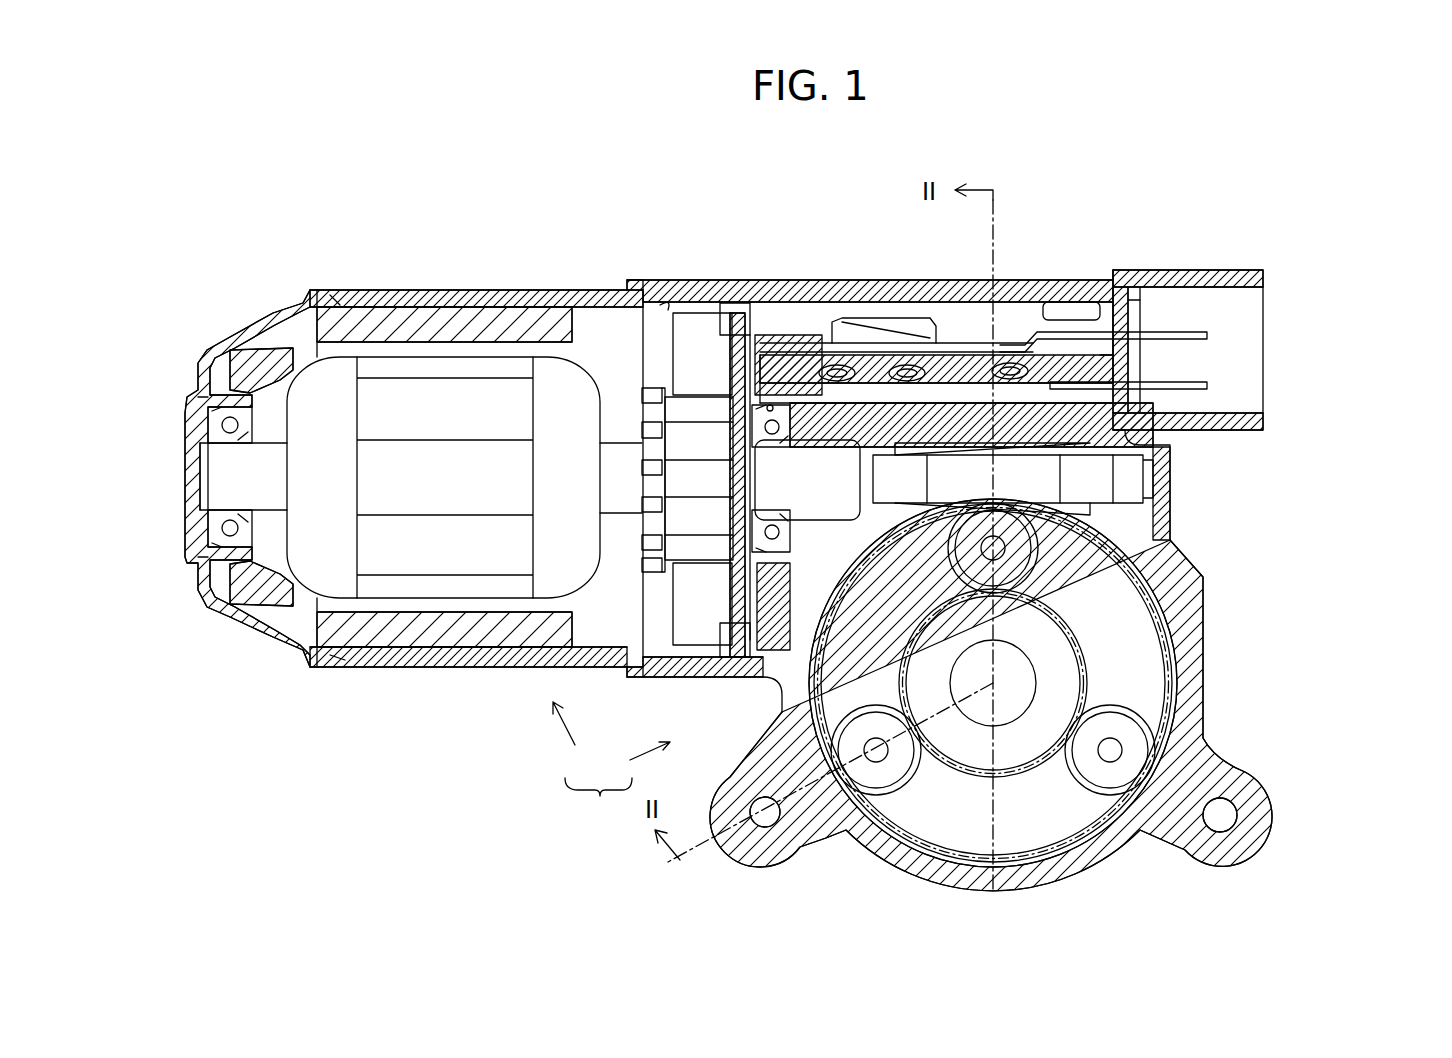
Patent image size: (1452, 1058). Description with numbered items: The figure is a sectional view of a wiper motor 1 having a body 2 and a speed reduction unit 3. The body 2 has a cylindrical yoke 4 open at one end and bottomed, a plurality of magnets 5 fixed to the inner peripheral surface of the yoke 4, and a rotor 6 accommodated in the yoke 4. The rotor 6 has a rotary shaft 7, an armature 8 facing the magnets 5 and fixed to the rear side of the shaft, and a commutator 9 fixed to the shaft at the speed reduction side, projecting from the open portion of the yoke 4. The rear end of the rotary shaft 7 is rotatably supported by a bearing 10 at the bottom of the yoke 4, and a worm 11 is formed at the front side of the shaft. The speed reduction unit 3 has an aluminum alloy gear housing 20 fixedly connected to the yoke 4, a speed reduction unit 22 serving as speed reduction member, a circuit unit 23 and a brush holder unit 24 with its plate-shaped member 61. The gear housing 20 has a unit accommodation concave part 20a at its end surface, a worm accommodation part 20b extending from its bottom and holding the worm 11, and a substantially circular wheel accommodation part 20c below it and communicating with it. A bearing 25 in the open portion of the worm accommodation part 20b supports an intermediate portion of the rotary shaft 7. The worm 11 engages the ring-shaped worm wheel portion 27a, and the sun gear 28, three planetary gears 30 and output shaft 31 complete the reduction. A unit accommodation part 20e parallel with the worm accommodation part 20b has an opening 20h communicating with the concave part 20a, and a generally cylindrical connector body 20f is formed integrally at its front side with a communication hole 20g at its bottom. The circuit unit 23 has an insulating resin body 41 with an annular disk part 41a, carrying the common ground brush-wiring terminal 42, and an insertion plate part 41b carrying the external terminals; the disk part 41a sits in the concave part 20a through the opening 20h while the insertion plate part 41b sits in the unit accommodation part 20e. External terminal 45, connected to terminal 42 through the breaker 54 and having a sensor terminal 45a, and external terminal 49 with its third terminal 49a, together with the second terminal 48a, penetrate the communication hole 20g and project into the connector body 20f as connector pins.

The motor 1 is at (598, 808).
The body 2 is at (566, 743).
The speed reduction unit 3 is at (638, 763).
The yoke housing 4 is at (462, 300).
The magnets 5 is at (385, 305).
The rotor 6 is at (597, 362).
The rotary shaft 7 is at (212, 478).
The armature 8 is at (585, 578).
The commutator 9 is at (680, 480).
The bearing 10 is at (213, 603).
The worm 11 is at (1130, 490).
The gear housing 20 is at (800, 292).
The unit accommodation concave part 20a is at (690, 672).
The worm accommodation part 20b is at (1132, 437).
The wheel accommodation part 20c is at (1052, 868).
The unit accommodation part 20e is at (905, 308).
The connector body 20f is at (1185, 272).
The communication hole 20g is at (1135, 305).
The opening 20h is at (740, 330).
The speed reduction unit 22 is at (1198, 656).
The circuit unit 23 is at (1003, 345).
The brush holder unit 24 is at (696, 295).
The bearing 25 is at (773, 436).
The worm wheel portion 27a is at (968, 872).
The sun gear 28 is at (1085, 640).
The planetary gears 30 is at (1038, 552).
The output shaft 31 is at (990, 722).
The body 41 is at (740, 485).
The disk part 41a is at (752, 702).
The insertion plate part 41b is at (962, 350).
The brush-wiring terminal 42 is at (768, 332).
The external terminal 45 is at (1207, 335).
The first terminal 45a is at (1010, 381).
The second terminal 48a is at (907, 383).
The external terminal 49 is at (1207, 385).
The third terminal 49a is at (837, 383).
The circuit breaker 54 is at (853, 318).
The plate-shaped member 61 is at (733, 308).